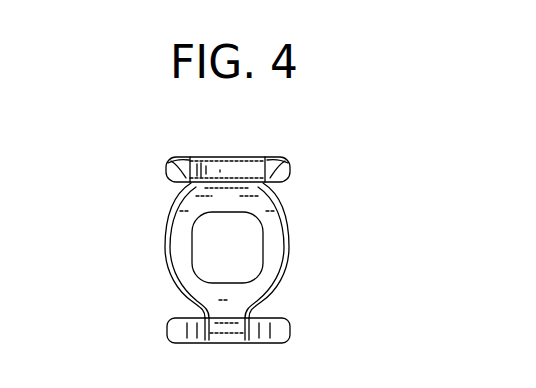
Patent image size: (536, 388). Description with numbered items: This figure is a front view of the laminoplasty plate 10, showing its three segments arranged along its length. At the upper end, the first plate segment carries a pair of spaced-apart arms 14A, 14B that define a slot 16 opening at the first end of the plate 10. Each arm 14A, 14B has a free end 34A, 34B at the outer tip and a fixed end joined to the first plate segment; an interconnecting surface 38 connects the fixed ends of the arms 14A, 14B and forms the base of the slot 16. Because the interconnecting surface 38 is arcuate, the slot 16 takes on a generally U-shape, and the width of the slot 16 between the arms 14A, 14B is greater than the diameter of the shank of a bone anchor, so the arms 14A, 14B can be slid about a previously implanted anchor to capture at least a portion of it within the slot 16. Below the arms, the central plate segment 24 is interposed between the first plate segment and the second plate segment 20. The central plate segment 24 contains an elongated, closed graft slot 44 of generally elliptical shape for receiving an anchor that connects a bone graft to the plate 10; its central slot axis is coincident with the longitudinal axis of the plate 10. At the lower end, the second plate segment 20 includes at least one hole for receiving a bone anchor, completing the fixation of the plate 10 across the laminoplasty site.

The laminoplasty plate 10 is at (157, 252).
The slot 16 is at (228, 172).
The interconnecting surface 38 is at (201, 167).
The arm 14A is at (289, 162).
The arm 14B is at (178, 181).
The free end 34A is at (283, 180).
The free end 34B is at (171, 161).
The graft slot 44 is at (255, 230).
The central plate segment 24 is at (288, 250).
The second plate segment 20 is at (285, 330).